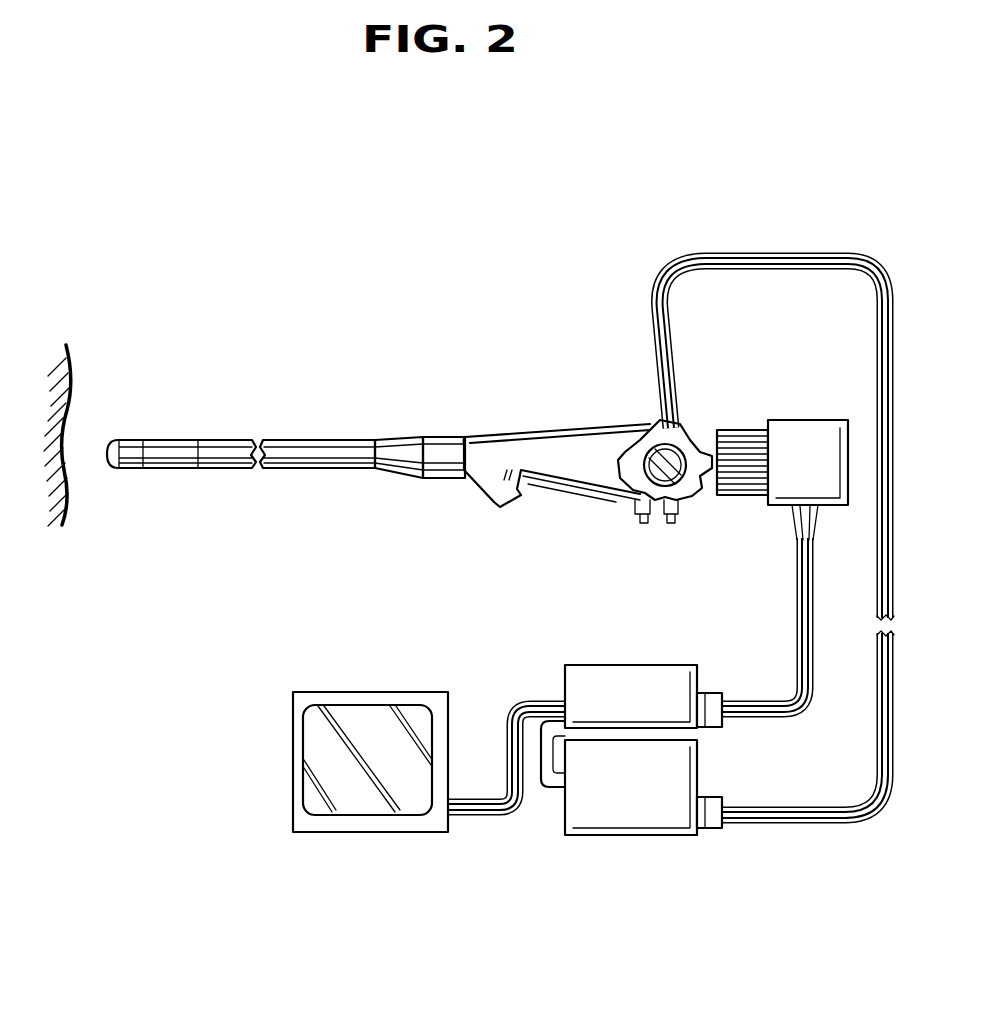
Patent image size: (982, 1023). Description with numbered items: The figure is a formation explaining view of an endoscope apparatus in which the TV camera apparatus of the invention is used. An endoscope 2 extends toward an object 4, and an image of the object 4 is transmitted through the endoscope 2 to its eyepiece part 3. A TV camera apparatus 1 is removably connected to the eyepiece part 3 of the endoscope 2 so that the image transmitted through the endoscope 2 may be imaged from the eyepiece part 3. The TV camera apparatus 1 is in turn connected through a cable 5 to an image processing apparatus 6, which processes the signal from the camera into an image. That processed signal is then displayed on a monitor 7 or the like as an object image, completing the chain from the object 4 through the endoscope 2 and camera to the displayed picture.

The TV camera apparatus 1 is at (806, 420).
The endoscope 2 is at (416, 418).
The eyepiece part 3 is at (739, 430).
The object 4 is at (73, 385).
The cable 5 is at (796, 583).
The image processing apparatus 6 is at (618, 665).
The monitor 7 is at (378, 680).